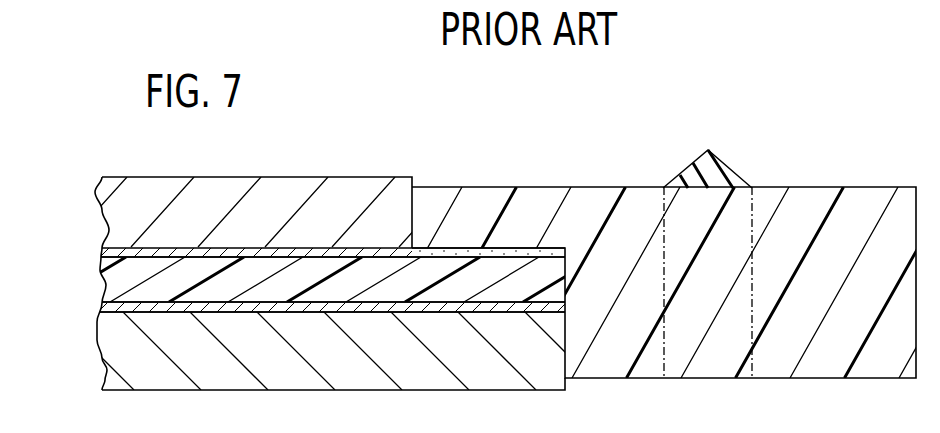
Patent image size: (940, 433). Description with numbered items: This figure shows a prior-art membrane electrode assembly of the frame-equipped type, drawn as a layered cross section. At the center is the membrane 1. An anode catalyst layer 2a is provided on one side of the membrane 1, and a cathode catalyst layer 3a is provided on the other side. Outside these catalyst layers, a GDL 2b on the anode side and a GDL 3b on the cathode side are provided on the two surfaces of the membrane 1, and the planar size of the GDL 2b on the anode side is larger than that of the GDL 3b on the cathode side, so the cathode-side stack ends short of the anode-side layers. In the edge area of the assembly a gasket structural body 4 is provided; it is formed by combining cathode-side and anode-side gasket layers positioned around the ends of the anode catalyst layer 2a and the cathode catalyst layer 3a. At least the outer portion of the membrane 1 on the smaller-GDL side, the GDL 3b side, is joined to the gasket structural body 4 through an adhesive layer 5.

The membrane 1 is at (112, 278).
The anode catalyst layer 2a is at (134, 312).
The GDL 2b is at (120, 368).
The cathode catalyst layer 3a is at (152, 252).
The GDL 3b is at (105, 188).
The gasket structural body 4 is at (810, 193).
The adhesive layer 5 is at (468, 255).